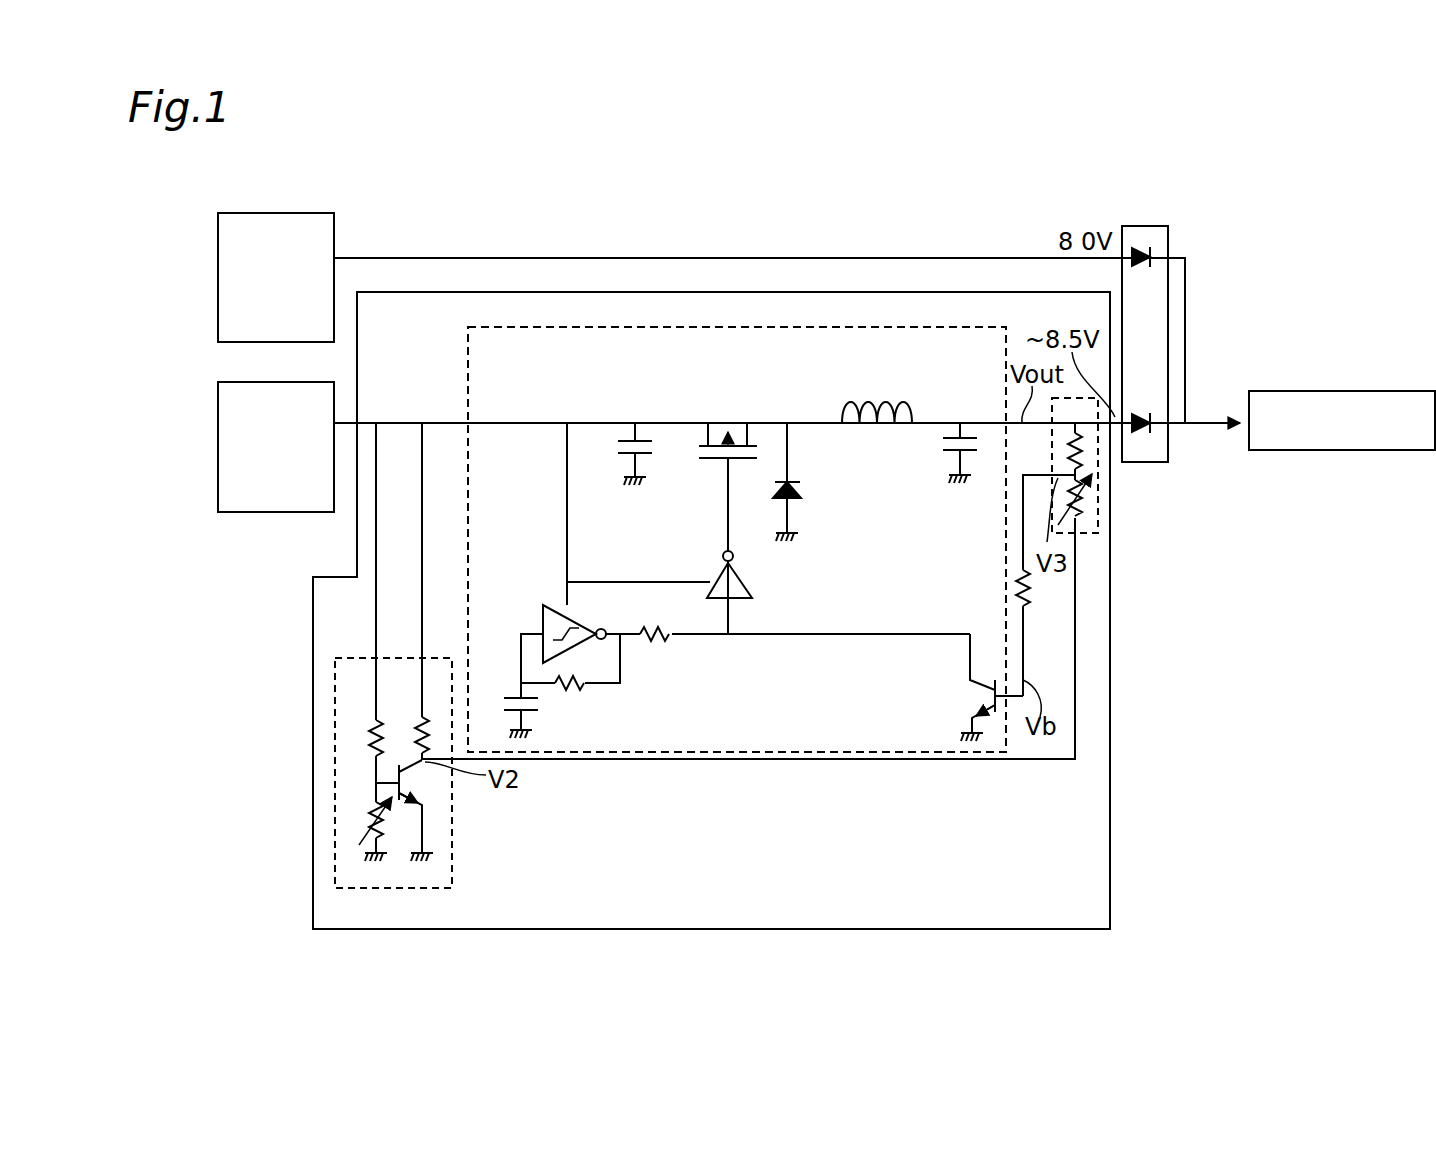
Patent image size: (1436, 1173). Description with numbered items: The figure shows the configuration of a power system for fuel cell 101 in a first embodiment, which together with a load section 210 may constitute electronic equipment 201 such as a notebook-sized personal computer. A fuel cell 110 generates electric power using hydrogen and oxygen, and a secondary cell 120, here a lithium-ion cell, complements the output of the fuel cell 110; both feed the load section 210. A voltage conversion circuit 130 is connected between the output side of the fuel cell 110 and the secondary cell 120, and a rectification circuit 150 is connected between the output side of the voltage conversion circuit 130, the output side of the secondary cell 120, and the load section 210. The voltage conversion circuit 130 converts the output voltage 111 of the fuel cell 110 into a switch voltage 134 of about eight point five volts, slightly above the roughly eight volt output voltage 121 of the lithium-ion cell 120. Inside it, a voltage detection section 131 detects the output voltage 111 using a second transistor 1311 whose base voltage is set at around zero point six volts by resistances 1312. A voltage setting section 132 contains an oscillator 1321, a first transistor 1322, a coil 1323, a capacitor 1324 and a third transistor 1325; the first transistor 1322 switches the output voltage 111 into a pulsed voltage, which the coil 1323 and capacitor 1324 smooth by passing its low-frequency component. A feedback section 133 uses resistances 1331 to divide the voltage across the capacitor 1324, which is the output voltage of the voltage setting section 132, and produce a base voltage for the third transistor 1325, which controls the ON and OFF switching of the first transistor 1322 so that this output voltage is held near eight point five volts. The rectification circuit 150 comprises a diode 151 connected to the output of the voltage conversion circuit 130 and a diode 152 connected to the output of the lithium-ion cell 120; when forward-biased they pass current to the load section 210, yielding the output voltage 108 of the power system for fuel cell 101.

The power system for fuel cell 101 is at (843, 210).
The output voltage 108 is at (1200, 420).
The fuel cell 110 is at (278, 516).
The output voltage 111 is at (363, 420).
The secondary cell 120 is at (280, 210).
The output voltage 121 is at (368, 258).
The voltage conversion circuit 130 is at (307, 641).
The voltage detection section 131 is at (452, 823).
The voltage setting section 132 is at (468, 368).
The feedback section 133 is at (1085, 538).
The switch voltage 134 is at (1112, 436).
The rectification circuit 150 is at (1134, 224).
The diode 151 is at (1143, 434).
The diode 152 is at (1142, 245).
The electronic equipment 201 is at (1216, 818).
The load section 210 is at (1340, 391).
The second transistor 1311 is at (418, 783).
The resistances 1312 is at (368, 822).
The oscillator 1321 is at (532, 613).
The first transistor 1322 is at (729, 413).
The coil 1323 is at (878, 430).
The capacitor 1324 is at (935, 445).
The third transistor 1325 is at (978, 700).
The resistances 1331 is at (1082, 505).